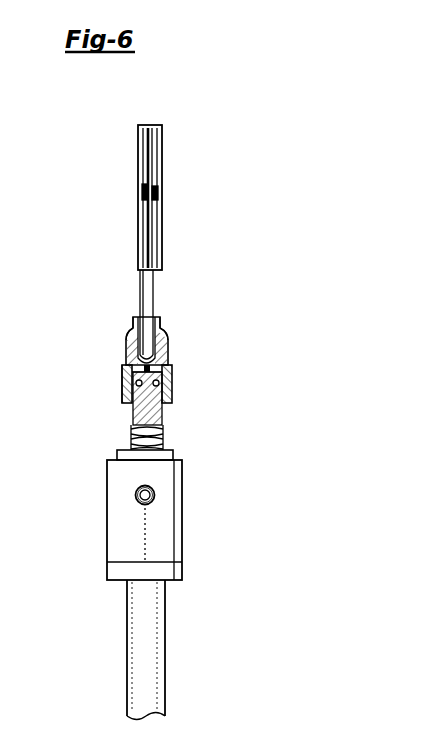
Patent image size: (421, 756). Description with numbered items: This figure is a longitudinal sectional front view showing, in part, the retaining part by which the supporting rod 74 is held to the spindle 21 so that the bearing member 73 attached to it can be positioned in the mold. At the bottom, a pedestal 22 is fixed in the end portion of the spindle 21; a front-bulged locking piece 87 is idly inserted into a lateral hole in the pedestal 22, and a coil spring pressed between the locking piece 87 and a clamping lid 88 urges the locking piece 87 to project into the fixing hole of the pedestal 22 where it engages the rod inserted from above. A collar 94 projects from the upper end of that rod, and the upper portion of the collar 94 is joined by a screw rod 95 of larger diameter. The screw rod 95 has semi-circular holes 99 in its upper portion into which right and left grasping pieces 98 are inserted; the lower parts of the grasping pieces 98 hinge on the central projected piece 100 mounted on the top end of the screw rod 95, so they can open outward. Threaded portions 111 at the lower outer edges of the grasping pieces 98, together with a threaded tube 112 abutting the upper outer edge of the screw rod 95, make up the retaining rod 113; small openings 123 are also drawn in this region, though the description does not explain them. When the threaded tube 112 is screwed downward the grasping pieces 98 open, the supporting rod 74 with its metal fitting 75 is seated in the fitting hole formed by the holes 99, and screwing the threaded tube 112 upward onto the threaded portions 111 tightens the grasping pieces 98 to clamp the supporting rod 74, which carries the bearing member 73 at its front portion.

The bearing member 73 is at (152, 152).
The supporting rod 74 is at (153, 290).
The metal fitting 75 is at (168, 350).
The grasping pieces 98 is at (133, 318).
The semi-circular holes 99 is at (128, 333).
The central projected piece 100 is at (172, 372).
The threaded portion 111 is at (123, 372).
The threaded tube 112 is at (122, 386).
The openings 123 is at (135, 388).
The screw rod 95 is at (162, 420).
The retaining rod 113 is at (130, 428).
The collar 94 is at (174, 455).
The clamping lid 88 is at (135, 496).
The locking piece 87 is at (156, 494).
The pedestal 22 is at (171, 537).
The spindle 21 is at (150, 678).